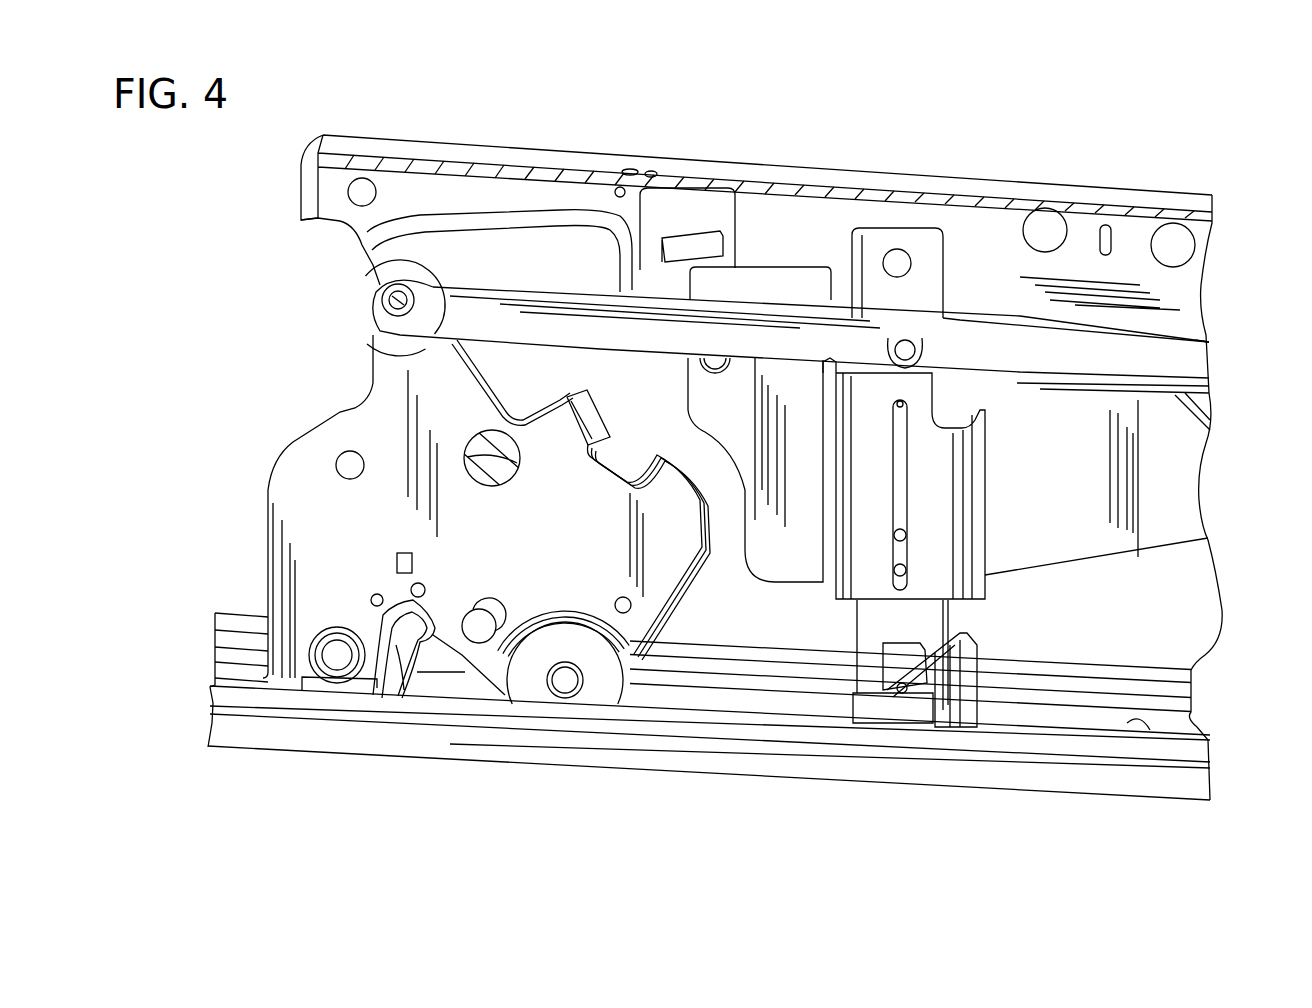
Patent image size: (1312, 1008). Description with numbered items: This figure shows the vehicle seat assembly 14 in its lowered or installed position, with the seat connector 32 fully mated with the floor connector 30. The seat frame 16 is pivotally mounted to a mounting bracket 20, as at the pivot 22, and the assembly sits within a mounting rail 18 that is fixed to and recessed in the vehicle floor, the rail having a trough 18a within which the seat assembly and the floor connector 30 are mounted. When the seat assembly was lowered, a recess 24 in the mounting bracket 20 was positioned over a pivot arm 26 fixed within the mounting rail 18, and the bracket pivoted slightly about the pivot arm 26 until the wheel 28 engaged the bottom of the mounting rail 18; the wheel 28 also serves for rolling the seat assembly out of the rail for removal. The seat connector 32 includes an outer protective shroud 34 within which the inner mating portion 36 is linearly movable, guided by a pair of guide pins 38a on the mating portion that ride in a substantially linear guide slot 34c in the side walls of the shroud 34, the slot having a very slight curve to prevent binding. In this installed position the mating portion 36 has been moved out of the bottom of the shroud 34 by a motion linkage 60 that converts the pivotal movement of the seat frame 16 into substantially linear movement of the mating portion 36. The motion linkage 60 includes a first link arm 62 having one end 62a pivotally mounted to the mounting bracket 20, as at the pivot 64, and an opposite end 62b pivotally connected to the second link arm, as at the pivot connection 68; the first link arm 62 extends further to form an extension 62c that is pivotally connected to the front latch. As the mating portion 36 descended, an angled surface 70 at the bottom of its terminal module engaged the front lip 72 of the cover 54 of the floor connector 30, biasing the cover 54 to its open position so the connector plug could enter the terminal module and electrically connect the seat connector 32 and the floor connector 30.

The vehicle seat assembly 14 is at (333, 357).
The seat frame 16 is at (768, 196).
The mounting rail 18 is at (1153, 690).
The trough 18a is at (1150, 730).
The mounting bracket 20 is at (298, 492).
The pivot 22 is at (493, 468).
The recess 24 is at (383, 628).
The pivot arm 26 is at (393, 625).
The wheel 28 is at (597, 690).
The floor connector 30 is at (978, 690).
The seat connector 32 is at (990, 462).
The outer protective shroud 34 is at (855, 505).
The guide slot 34c is at (898, 460).
The mating portion 36 is at (858, 628).
The guide projections or pins 38a is at (903, 572).
The cover 54 is at (963, 707).
The motion linkage 60 is at (952, 303).
The first link arm 62 is at (612, 322).
The one end of first link arm 62a is at (425, 305).
The opposite end of first link arm 62b is at (866, 235).
The extension 62c is at (1072, 350).
The pivot 64 is at (398, 285).
The pivot connection 68 is at (908, 332).
The angled surface 70 is at (890, 683).
The front lip 72 is at (943, 662).